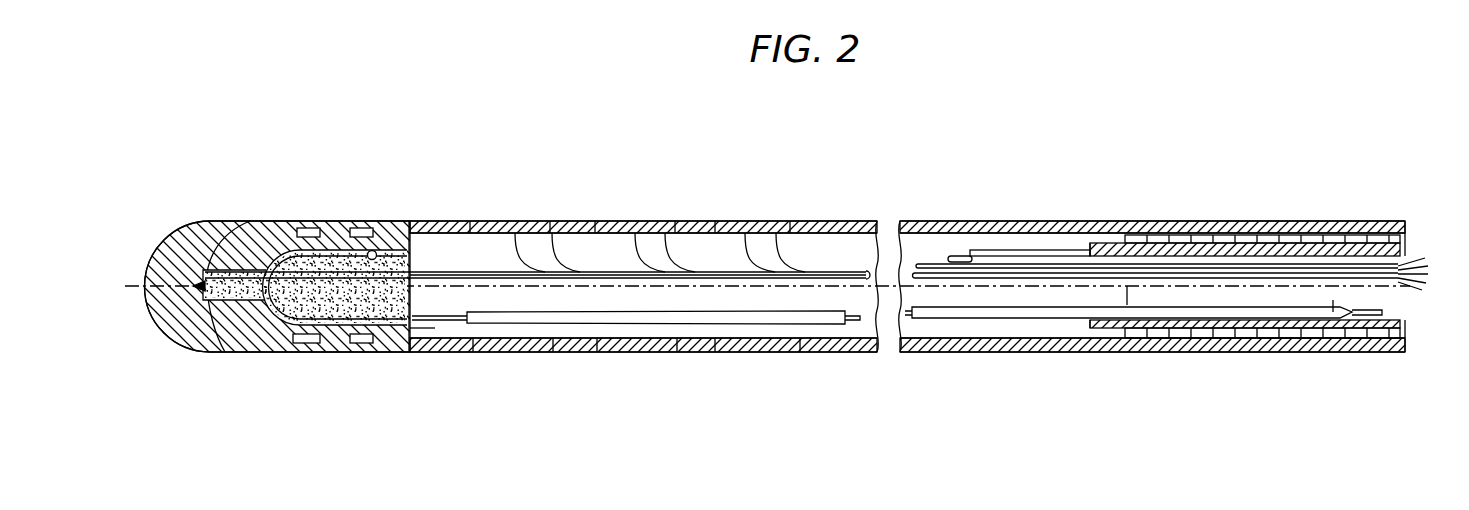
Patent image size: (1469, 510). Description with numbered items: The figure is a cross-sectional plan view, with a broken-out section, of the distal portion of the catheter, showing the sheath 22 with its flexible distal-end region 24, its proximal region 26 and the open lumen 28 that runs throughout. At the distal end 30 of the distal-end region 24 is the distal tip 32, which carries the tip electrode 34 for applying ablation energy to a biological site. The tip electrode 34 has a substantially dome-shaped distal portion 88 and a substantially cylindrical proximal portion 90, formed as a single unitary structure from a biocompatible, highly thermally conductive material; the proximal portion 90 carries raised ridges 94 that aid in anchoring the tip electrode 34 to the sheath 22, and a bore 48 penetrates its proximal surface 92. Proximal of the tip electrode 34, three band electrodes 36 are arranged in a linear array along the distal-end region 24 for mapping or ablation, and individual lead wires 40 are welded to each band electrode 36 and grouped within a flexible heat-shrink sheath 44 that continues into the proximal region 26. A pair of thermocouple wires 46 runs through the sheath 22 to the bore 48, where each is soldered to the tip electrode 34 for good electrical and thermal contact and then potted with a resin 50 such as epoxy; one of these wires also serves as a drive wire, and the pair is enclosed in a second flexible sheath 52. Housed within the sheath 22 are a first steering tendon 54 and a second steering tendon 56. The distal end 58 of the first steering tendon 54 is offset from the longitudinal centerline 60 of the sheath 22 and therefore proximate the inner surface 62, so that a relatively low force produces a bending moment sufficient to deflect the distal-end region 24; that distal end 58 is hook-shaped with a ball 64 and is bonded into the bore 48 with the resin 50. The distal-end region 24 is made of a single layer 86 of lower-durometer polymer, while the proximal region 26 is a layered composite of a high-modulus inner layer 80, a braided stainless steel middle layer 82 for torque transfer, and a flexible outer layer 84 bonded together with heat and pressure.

The sheath 22 is at (1200, 221).
The distal-end region 24 is at (808, 221).
The proximal region 26 is at (1285, 221).
The open lumen 28 is at (832, 322).
The distal end 30 is at (287, 221).
The distal tip 32 is at (222, 221).
The tip electrode 34 is at (200, 221).
The band electrodes 36 is at (520, 221).
The lead wires 40 is at (553, 221).
The sheath 44 is at (850, 268).
The thermocouple wires 46 is at (256, 221).
The bore 48 is at (372, 352).
The resin 50 is at (290, 336).
The sheath 52 is at (814, 270).
The first steering tendon 54 is at (432, 330).
The second steering tendon 56 is at (956, 256).
The distal end 58 is at (262, 306).
The longitudinal centerline 60 is at (888, 288).
The inner surface 62 is at (1333, 305).
The ball 64 is at (420, 232).
The inner layer 80 is at (1220, 333).
The middle layer 82 is at (1170, 336).
The outer layer 84 is at (1300, 352).
The single layer 86 is at (1095, 352).
The dome-shaped distal portion 88 is at (150, 254).
The cylindrical proximal portion 90 is at (310, 228).
The proximal surface 92 is at (437, 320).
The raised ridges 94 is at (330, 352).